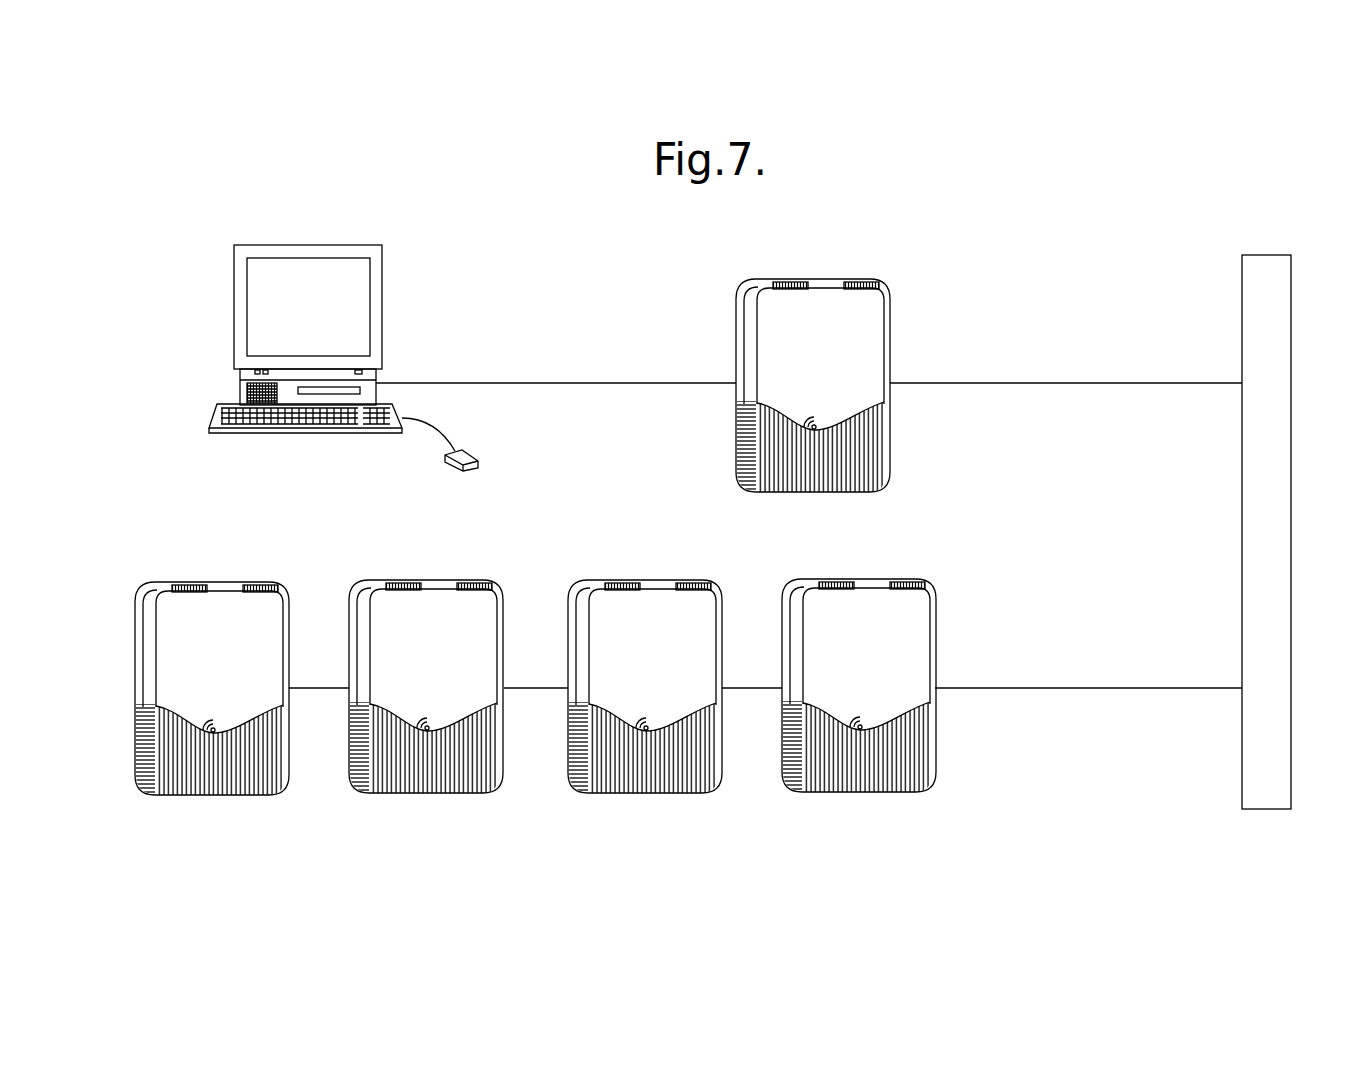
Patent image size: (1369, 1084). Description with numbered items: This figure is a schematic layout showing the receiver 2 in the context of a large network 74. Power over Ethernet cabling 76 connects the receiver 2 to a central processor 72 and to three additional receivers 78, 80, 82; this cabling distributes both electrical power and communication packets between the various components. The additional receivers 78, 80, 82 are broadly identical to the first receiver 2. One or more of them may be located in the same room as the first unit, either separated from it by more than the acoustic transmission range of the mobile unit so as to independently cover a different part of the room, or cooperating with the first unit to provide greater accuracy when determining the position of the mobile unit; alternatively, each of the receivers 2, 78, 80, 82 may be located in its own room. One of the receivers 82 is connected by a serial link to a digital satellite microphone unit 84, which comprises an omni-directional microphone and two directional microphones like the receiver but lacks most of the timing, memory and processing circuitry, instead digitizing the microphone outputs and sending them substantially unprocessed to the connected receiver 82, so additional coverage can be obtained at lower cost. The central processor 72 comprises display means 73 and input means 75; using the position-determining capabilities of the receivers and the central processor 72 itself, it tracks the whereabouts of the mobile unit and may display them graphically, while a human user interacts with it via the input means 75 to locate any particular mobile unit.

The receiver 2 is at (863, 323).
The central processor 72 is at (454, 277).
The display means 73 is at (275, 300).
The network 74 is at (1267, 549).
The input means 75 is at (275, 418).
The Power over Ethernet cabling 76 is at (1078, 383).
The additional receiver 78 is at (810, 602).
The additional receiver 80 is at (612, 605).
The additional receiver 82 is at (382, 602).
The digital satellite microphone unit 84 is at (173, 639).